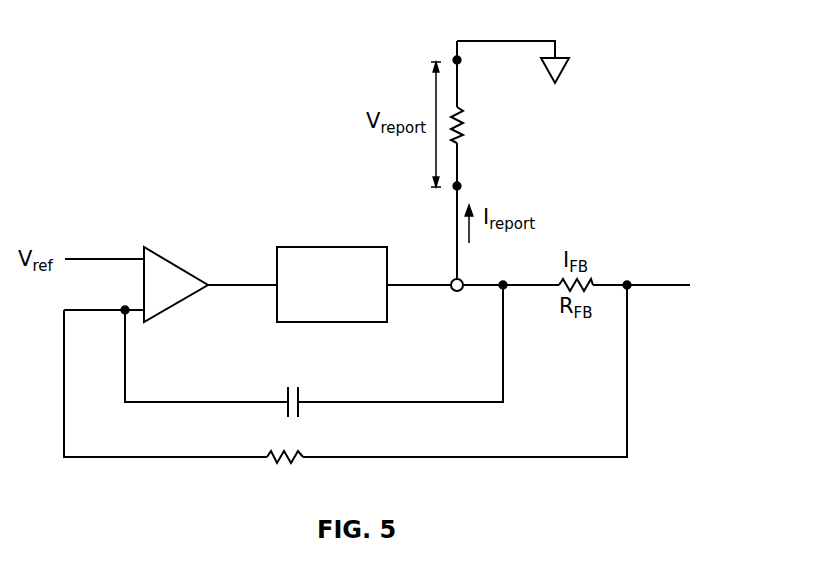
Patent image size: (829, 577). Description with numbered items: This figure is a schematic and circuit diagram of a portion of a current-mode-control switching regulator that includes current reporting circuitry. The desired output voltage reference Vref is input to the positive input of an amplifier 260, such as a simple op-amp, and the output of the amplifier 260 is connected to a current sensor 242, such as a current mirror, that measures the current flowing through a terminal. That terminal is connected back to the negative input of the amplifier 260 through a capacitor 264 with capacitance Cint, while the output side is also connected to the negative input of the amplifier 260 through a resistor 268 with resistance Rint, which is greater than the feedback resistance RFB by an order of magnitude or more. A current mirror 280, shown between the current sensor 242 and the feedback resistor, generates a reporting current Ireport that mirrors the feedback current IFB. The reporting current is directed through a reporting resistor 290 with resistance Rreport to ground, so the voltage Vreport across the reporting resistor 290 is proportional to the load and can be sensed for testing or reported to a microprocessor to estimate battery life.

The current sensor 242 is at (330, 247).
The amplifier 260 is at (172, 262).
The capacitor 264 is at (286, 393).
The resistor 268 is at (299, 452).
The current mirror 280 is at (457, 292).
The reporting resistor 290 is at (470, 109).